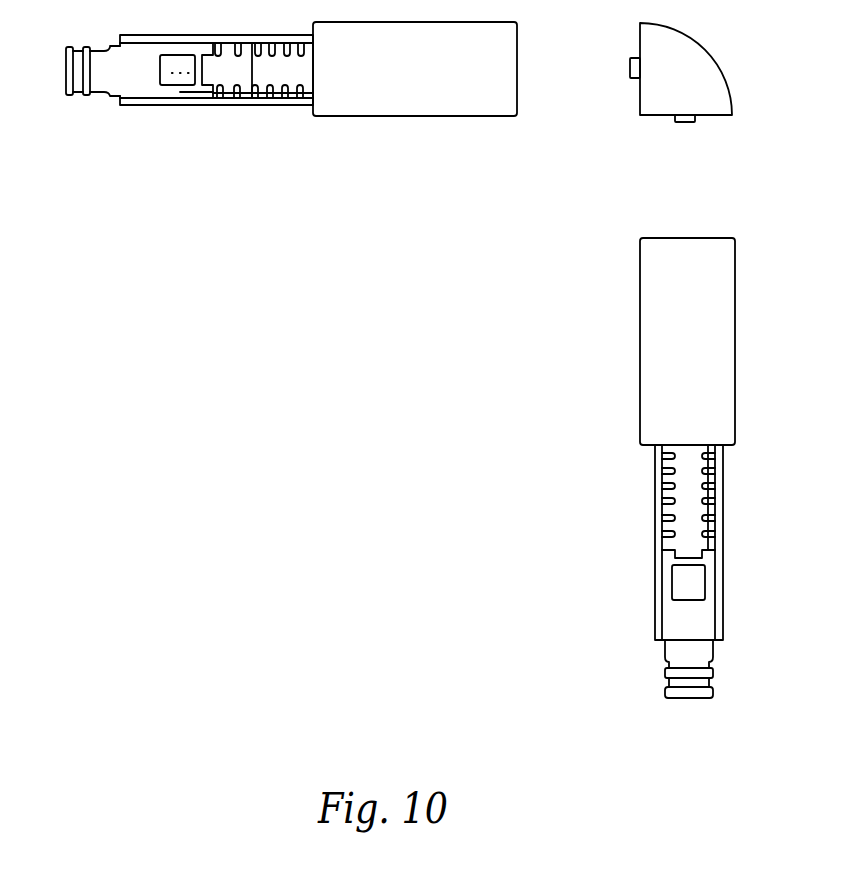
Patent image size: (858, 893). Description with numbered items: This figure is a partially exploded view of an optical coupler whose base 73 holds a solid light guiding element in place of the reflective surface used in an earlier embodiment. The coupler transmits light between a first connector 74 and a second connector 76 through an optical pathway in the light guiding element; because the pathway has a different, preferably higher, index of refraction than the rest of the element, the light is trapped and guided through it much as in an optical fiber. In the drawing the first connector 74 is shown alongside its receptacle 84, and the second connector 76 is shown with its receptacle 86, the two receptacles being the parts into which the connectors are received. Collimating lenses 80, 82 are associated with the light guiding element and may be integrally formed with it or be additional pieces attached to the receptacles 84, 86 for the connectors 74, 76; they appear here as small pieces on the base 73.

The base 73 is at (722, 70).
The first connector 74 is at (262, 105).
The second connector 76 is at (710, 583).
The collimating lens 80 is at (630, 68).
The collimating lens 82 is at (678, 125).
The receptacle 84 is at (435, 117).
The receptacle 86 is at (733, 337).